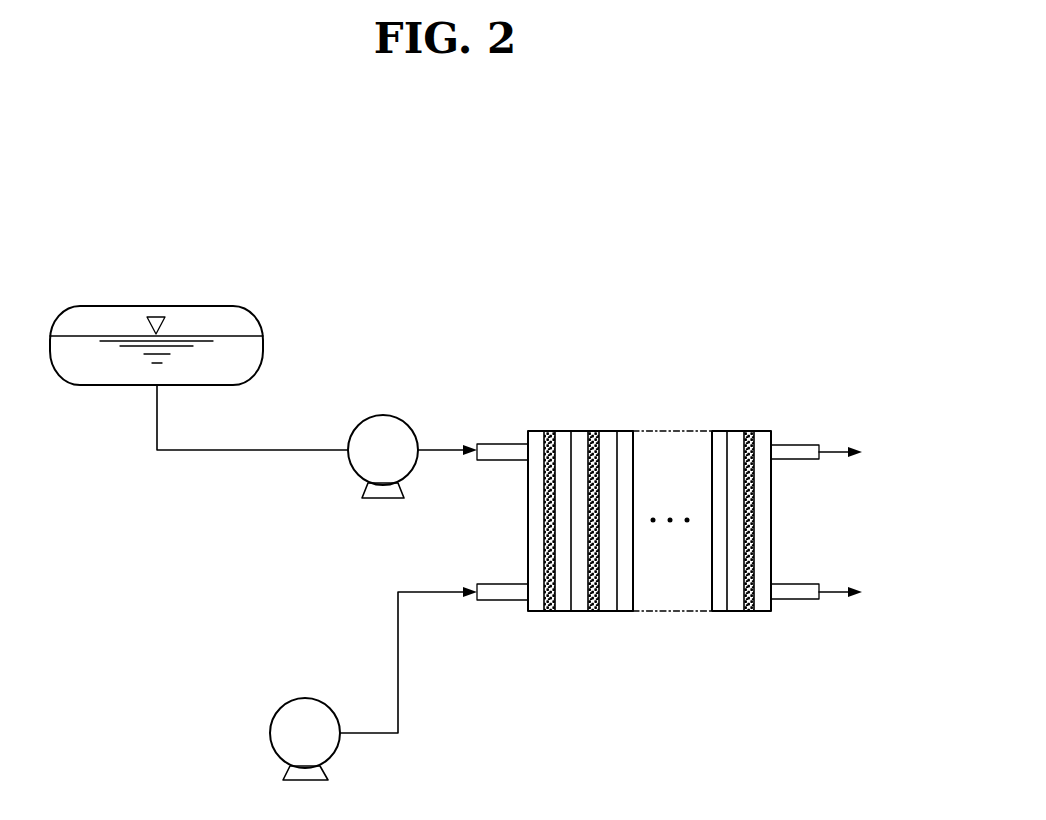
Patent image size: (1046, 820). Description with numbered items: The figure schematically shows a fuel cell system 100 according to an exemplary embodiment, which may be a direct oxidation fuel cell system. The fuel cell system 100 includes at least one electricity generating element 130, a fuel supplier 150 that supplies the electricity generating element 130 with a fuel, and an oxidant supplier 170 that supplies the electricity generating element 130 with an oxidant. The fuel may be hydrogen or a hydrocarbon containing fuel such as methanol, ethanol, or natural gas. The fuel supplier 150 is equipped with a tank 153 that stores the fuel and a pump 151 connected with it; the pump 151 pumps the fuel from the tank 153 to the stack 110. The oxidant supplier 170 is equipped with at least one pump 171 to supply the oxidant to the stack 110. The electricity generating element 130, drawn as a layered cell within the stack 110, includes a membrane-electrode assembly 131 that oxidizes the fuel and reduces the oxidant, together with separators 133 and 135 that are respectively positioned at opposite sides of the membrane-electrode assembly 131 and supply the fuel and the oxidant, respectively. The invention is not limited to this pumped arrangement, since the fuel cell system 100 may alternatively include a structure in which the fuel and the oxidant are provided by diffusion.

The fuel cell system 100 is at (427, 230).
The stack 110 is at (731, 406).
The electricity generating element 130 is at (513, 688).
The membrane-electrode assembly 131 is at (592, 611).
The separator 133 is at (578, 611).
The separator 135 is at (605, 611).
The fuel supplier 150 is at (88, 288).
The pump 151 is at (397, 418).
The tank 153 is at (183, 305).
The oxidant supplier 170 is at (253, 720).
The pump 171 is at (320, 700).